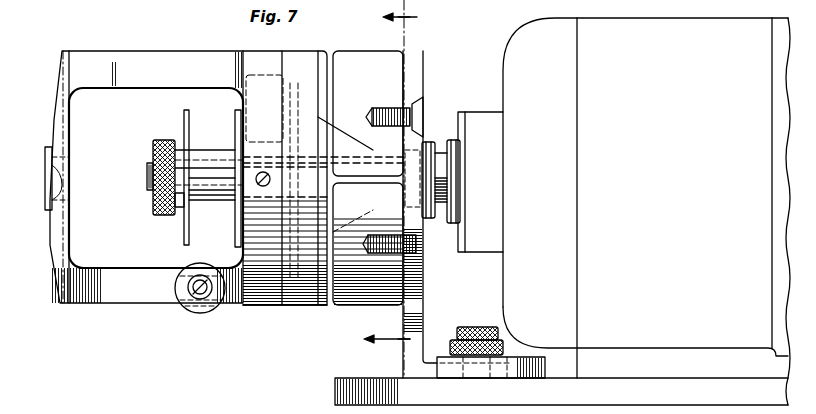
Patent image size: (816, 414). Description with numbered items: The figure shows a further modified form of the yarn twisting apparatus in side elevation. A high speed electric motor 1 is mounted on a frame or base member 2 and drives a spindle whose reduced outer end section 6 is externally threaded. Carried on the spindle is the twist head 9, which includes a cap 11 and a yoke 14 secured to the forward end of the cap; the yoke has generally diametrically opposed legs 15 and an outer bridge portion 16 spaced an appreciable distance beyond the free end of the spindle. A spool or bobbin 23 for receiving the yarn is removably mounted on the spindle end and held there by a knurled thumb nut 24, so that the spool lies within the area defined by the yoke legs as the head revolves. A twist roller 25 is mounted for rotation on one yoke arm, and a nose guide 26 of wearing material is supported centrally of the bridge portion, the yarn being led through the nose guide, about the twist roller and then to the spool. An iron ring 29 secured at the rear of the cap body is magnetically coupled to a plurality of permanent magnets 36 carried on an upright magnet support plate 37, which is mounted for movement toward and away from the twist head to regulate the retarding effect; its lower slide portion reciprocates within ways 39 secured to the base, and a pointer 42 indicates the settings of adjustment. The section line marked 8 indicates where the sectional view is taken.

The high speed electric motor 1 is at (653, 19).
The frame or base member 2 is at (337, 377).
The reduced outer end section 6 is at (147, 172).
The section line 8- 8 is at (399, 189).
The twist head 9 is at (228, 318).
The cap 11 is at (300, 306).
The yoke 14 is at (253, 52).
The legs 15 is at (143, 57).
The bridge portion 16 is at (70, 224).
The spool or bobbin 23 is at (188, 128).
The knurled thumb nut 24 is at (160, 220).
The twist roller 25 is at (182, 305).
The nose guide 26 is at (48, 203).
The iron ring 29 is at (328, 52).
The permanent magnets 36 is at (350, 57).
The upright magnet support plate 37 is at (423, 80).
The ways 39 is at (545, 372).
The pointer 42 is at (432, 350).